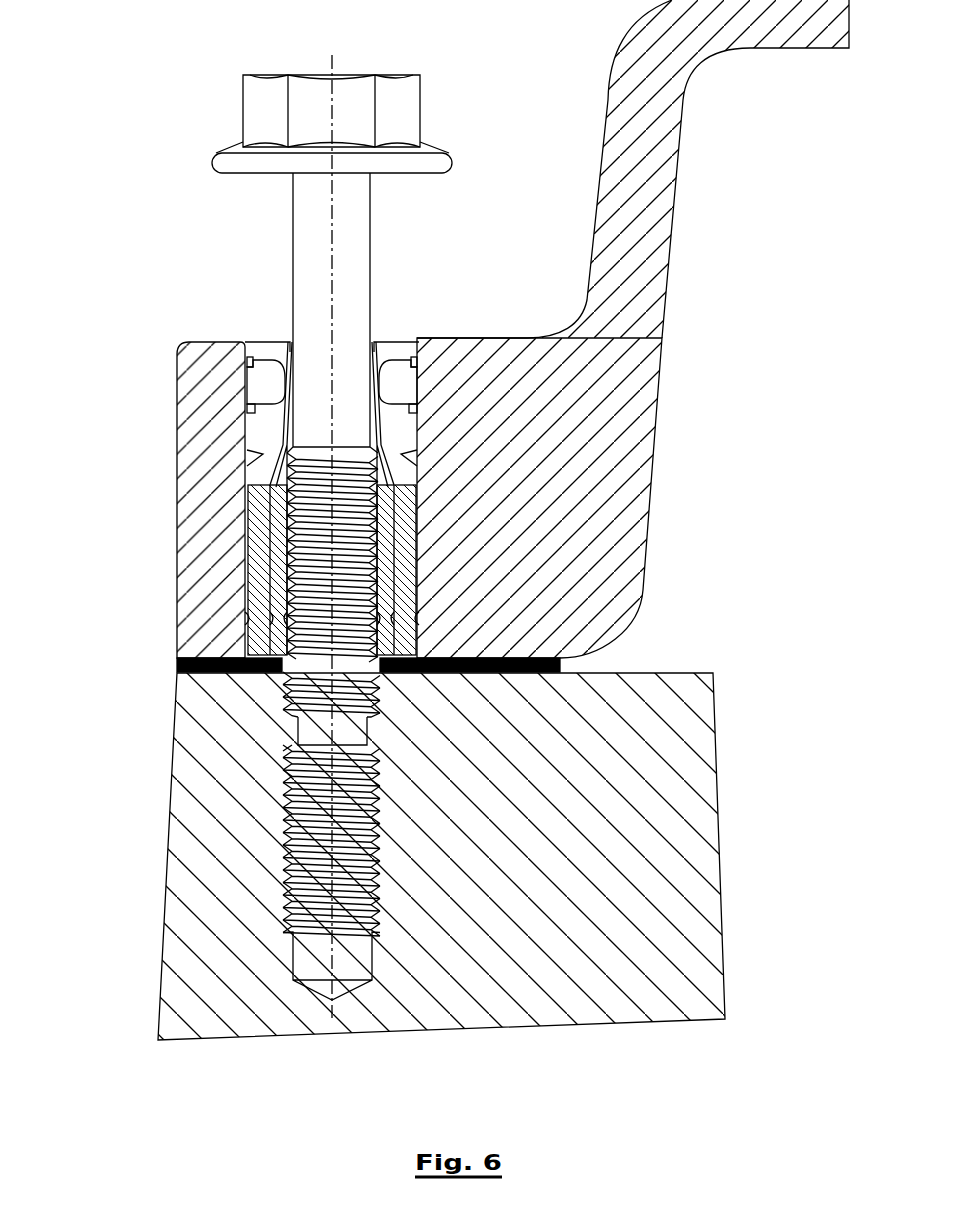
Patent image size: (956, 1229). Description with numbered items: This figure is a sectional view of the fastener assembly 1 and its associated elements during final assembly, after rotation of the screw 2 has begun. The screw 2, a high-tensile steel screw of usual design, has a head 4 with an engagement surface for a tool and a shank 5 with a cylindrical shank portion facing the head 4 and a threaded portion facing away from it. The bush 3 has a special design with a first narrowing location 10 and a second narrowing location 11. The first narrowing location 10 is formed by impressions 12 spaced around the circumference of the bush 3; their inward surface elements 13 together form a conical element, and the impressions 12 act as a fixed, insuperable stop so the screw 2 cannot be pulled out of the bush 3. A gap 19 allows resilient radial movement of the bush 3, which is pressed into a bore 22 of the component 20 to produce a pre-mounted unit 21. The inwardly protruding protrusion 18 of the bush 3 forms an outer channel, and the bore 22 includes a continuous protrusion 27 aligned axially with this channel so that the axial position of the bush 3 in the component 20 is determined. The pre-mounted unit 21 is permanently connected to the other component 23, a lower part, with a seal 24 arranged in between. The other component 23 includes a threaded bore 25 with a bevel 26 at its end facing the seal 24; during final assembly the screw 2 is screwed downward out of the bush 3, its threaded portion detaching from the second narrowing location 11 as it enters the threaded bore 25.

The fastener assembly 1 is at (150, 237).
The screw 2 is at (292, 292).
The shank 5 is at (332, 557).
The head 4 is at (243, 120).
The bush 3 is at (240, 545).
The first narrowing location 10 is at (275, 388).
The second narrowing location 11 is at (270, 470).
The impressions 12 is at (272, 378).
The surface elements 13 is at (275, 380).
The bore 22 is at (262, 454).
The gap 19 is at (285, 580).
The protrusion 18 is at (230, 597).
The continuous protrusion 27 is at (243, 618).
The seal 24 is at (177, 667).
The bevel 26 is at (280, 680).
The threaded bore 25 is at (287, 825).
The component 20 is at (580, 385).
The pre-mounted unit 21 is at (673, 255).
The other component 23 is at (595, 830).